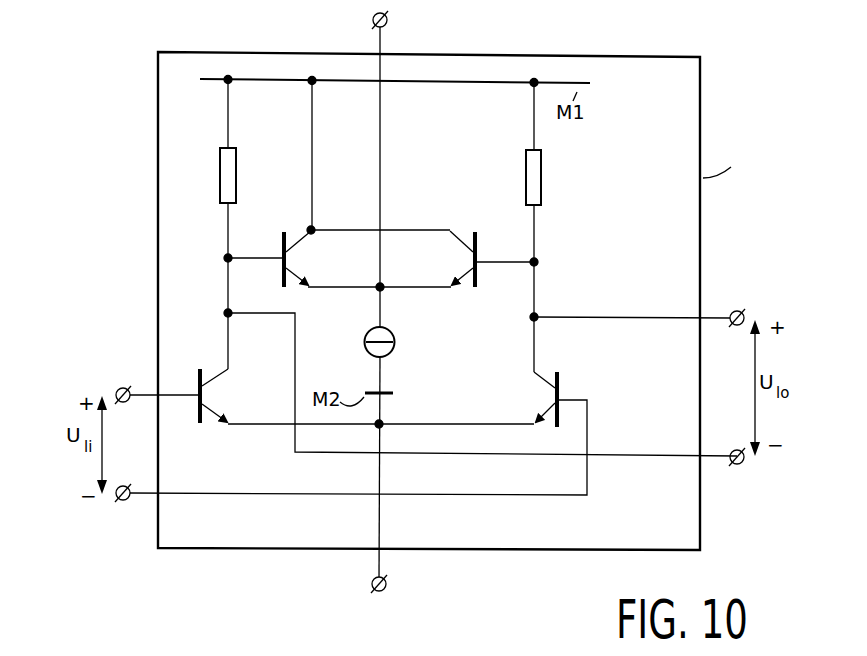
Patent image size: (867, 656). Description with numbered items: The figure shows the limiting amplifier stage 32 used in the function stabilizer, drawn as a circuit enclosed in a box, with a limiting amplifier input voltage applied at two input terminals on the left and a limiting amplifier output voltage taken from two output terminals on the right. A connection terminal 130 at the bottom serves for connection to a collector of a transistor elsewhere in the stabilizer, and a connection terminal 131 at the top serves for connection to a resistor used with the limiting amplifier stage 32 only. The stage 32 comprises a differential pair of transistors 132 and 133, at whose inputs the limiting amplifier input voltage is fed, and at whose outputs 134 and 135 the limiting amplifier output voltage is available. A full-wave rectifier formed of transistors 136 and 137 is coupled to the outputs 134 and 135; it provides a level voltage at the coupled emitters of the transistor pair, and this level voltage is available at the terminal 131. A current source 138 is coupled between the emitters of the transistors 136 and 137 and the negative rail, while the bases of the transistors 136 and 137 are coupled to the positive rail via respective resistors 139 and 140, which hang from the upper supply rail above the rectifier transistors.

The limiting amplifier stage 32 is at (703, 98).
The connection terminal 130 is at (388, 583).
The connection terminal 131 is at (372, 20).
The transistor 132 is at (212, 395).
The transistor 133 is at (541, 398).
The output 134 is at (225, 313).
The output 135 is at (531, 318).
The transistor 136 is at (292, 258).
The transistor 137 is at (467, 260).
The current source 138 is at (395, 344).
The resistor 139 is at (238, 178).
The resistor 140 is at (542, 184).